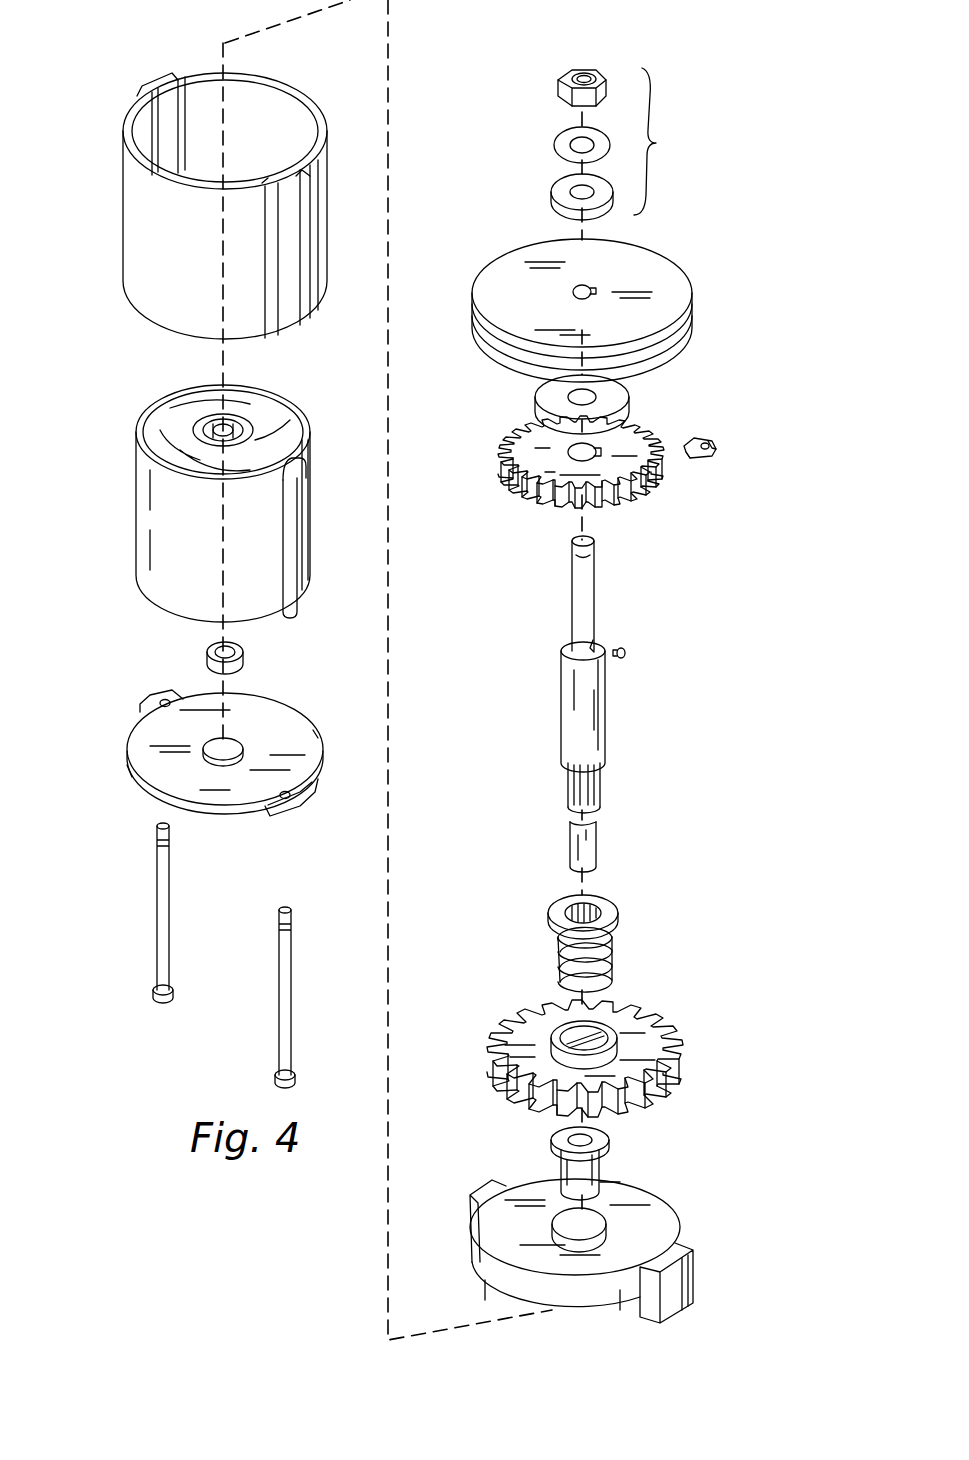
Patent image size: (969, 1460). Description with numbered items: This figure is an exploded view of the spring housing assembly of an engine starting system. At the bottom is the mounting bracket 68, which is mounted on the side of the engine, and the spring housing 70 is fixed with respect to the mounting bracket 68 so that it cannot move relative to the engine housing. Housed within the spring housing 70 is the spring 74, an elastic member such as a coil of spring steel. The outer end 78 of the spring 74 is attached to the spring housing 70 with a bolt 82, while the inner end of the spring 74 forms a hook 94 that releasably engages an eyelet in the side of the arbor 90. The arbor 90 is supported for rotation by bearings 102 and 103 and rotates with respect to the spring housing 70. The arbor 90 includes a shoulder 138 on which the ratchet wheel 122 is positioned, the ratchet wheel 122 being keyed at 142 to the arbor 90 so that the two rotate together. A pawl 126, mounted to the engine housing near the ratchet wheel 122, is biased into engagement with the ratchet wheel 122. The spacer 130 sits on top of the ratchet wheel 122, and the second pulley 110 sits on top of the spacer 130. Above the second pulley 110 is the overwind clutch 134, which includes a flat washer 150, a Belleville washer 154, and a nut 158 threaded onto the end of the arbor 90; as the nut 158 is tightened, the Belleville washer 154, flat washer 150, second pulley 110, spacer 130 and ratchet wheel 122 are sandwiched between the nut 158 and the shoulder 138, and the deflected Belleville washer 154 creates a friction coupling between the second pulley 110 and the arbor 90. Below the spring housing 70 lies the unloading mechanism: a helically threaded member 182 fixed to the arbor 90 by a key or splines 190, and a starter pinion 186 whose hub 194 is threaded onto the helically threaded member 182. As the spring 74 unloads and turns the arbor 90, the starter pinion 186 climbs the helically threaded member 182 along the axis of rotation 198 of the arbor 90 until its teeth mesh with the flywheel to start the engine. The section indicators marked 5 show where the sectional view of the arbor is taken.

The spring housing 70 is at (150, 246).
The spring 74 is at (216, 509).
The hook 94 is at (248, 418).
The outer end 78 is at (290, 618).
The bearing 102 is at (205, 655).
The bolt 82 is at (278, 966).
The nut 158 is at (556, 90).
The Belleville washer 154 is at (553, 145).
The flat washer 150 is at (550, 192).
The overwind clutch 134 is at (660, 143).
The second pulley 110 is at (632, 260).
The spacer 130 is at (608, 398).
The ratchet wheel 122 is at (545, 457).
The pawl 126 is at (701, 460).
The shoulder 138 is at (565, 652).
The key 142 is at (628, 653).
The arbor 90 is at (644, 703).
The section line 5- 5 is at (530, 842).
The key or splines 190 is at (575, 810).
The axis of rotation 198 is at (590, 894).
The helically threaded member 182 is at (605, 952).
The hub 194 is at (580, 1030).
The starter pinion 186 is at (623, 1046).
The bearing 103 is at (565, 1165).
The mounting bracket 68 is at (656, 1200).